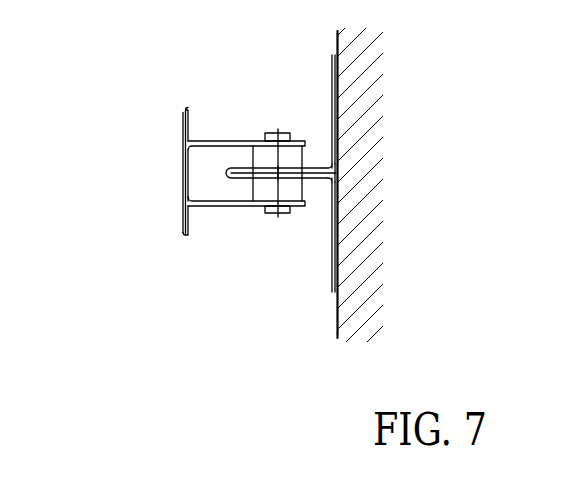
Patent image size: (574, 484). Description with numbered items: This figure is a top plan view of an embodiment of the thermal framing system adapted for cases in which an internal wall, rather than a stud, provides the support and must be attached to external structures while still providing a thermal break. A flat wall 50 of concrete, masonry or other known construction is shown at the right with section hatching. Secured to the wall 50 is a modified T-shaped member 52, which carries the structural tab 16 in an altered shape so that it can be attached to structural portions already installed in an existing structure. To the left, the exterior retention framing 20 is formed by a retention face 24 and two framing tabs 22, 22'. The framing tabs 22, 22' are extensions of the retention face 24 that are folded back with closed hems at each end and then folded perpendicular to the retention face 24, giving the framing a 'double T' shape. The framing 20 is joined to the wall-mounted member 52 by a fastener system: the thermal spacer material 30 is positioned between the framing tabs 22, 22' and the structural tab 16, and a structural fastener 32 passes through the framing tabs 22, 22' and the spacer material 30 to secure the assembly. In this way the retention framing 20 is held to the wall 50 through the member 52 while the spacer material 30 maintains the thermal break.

The structural tab 16 is at (318, 164).
The exterior retention framing 20 is at (165, 141).
The framing tab 22 is at (246, 105).
The framing tab 22' is at (246, 235).
The retention face 24 is at (183, 142).
The thermal spacer material 30 is at (252, 188).
The structural fastener 32 is at (279, 214).
The flat wall 50 is at (364, 143).
The modified T-shaped member 52 is at (333, 275).